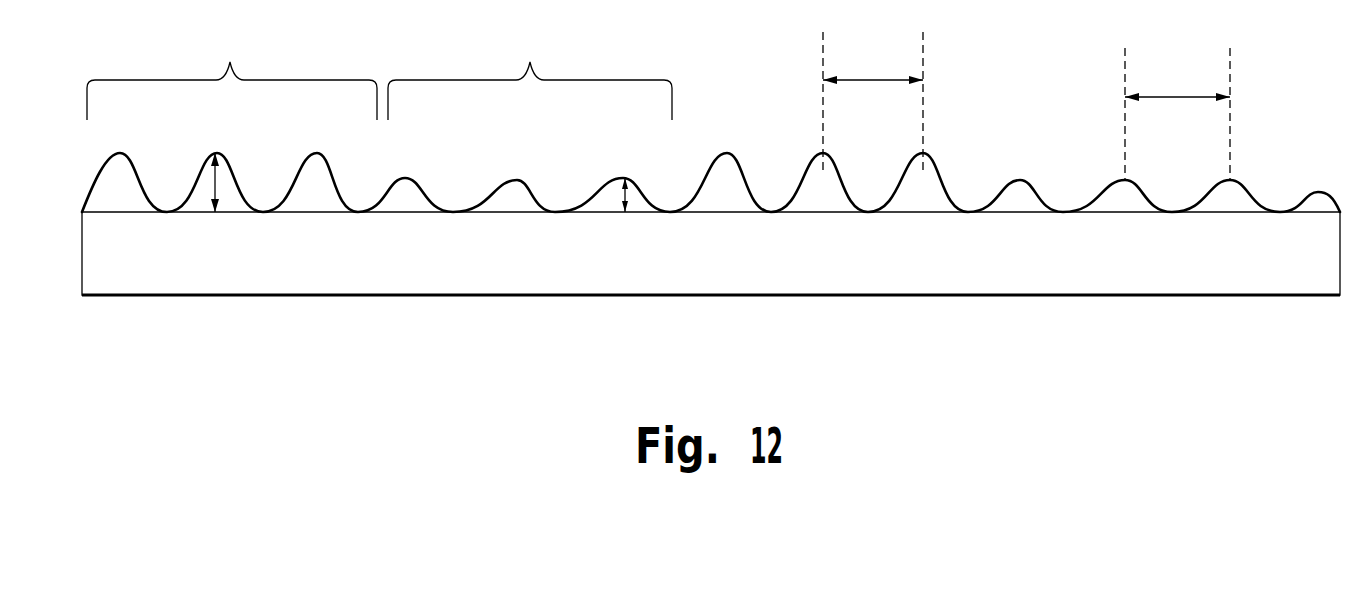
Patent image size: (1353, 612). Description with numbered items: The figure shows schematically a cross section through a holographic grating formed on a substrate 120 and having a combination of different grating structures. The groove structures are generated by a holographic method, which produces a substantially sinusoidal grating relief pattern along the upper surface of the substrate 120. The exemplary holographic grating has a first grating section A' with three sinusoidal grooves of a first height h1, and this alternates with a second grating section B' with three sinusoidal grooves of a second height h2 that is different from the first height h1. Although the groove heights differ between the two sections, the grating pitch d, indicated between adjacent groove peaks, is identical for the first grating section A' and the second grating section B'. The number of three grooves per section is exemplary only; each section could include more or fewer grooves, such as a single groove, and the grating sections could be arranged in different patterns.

The substrate with corrugated surface 120 is at (175, 296).
The first grating section A' is at (232, 74).
The second grating section B' is at (530, 74).
The first height h1 is at (218, 178).
The second height h2 is at (628, 190).
The grating pitch d is at (1026, 106).